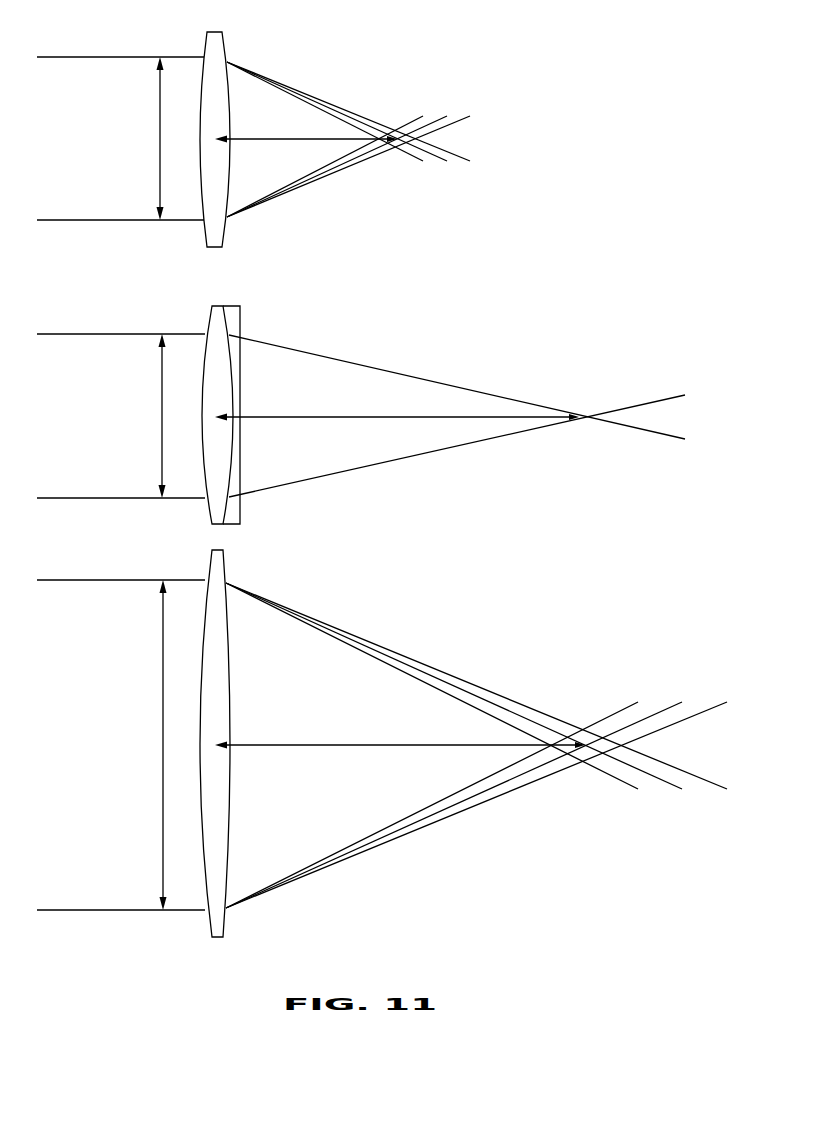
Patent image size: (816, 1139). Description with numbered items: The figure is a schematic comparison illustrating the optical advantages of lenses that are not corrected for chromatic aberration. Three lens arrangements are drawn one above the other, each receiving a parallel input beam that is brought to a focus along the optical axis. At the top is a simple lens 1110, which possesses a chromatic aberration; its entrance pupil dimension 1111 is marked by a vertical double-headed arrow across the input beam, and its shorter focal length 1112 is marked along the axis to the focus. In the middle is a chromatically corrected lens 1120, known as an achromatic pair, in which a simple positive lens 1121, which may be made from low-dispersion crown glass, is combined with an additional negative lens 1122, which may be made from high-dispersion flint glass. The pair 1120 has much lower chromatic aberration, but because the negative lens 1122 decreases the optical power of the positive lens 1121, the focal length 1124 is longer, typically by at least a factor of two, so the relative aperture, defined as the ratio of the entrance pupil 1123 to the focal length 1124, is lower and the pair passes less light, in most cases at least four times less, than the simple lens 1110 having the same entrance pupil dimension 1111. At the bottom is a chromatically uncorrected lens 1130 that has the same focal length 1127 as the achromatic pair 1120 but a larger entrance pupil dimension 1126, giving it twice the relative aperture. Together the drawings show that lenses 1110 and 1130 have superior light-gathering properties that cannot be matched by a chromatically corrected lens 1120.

The simple lens 1110 is at (208, 241).
The entrance pupil dimension 1111 is at (159, 101).
The focal length 1112 is at (242, 140).
The chromatically corrected lens 1120 is at (226, 400).
The simple lens 1121 is at (211, 516).
The negative lens 1122 is at (205, 304).
The entrance pupil 1123 is at (160, 378).
The focal length 1124 is at (247, 418).
The entrance pupil dimension 1126 is at (161, 621).
The focal length 1127 is at (295, 747).
The chromatically uncorrected lens 1130 is at (211, 929).